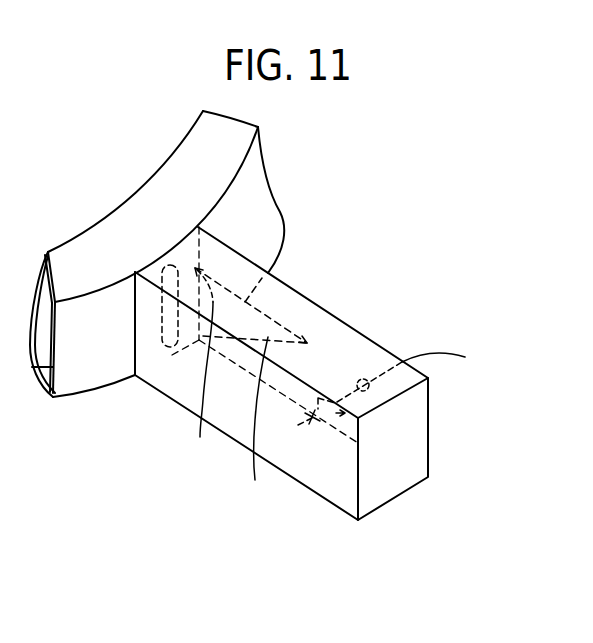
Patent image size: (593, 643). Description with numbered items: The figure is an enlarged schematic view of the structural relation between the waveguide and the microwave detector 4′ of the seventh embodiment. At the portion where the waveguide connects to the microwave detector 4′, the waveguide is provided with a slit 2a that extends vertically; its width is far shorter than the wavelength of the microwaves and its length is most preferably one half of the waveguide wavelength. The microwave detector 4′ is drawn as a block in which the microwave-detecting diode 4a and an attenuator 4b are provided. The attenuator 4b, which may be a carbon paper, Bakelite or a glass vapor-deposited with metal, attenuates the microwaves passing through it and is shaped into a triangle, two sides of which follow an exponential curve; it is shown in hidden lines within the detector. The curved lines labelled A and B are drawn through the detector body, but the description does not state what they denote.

The slit 2a is at (163, 317).
The microwave detector 4′ is at (342, 320).
The microwave-detecting diode 4a is at (322, 420).
The attenuator 4b is at (258, 317).
The path A is at (202, 368).
The path B is at (259, 422).